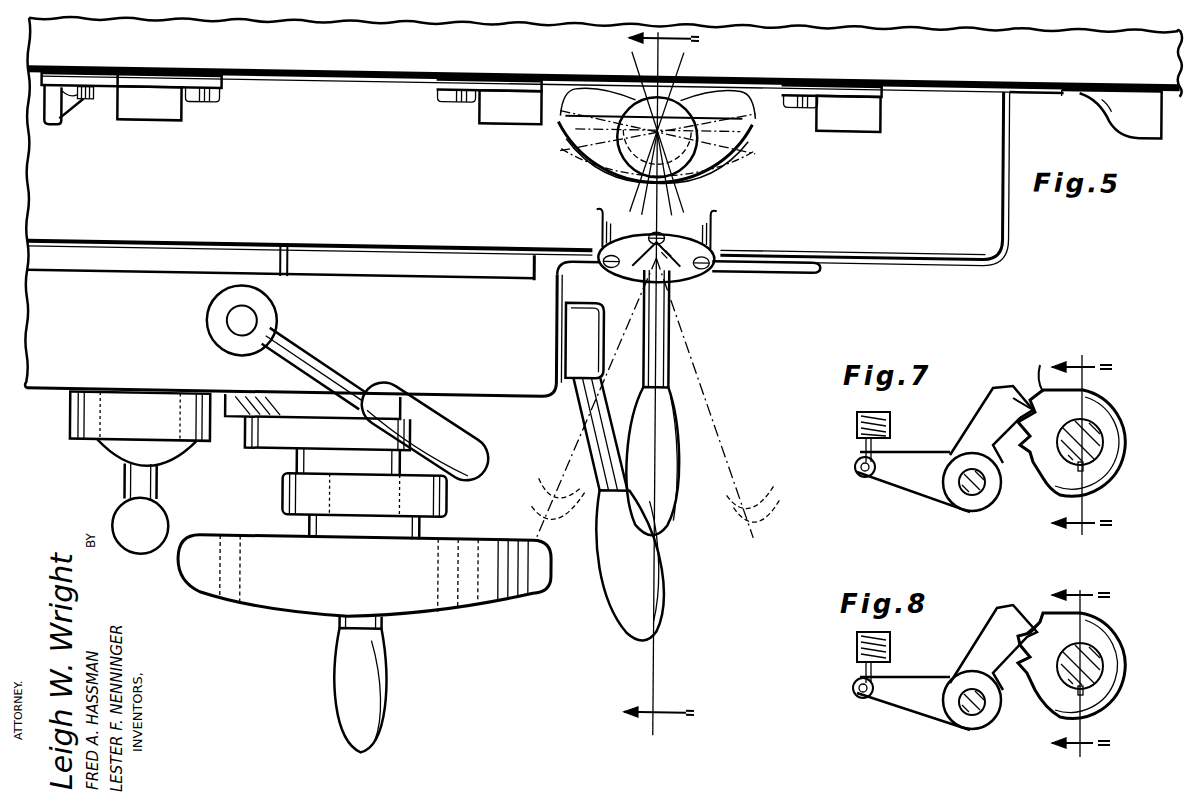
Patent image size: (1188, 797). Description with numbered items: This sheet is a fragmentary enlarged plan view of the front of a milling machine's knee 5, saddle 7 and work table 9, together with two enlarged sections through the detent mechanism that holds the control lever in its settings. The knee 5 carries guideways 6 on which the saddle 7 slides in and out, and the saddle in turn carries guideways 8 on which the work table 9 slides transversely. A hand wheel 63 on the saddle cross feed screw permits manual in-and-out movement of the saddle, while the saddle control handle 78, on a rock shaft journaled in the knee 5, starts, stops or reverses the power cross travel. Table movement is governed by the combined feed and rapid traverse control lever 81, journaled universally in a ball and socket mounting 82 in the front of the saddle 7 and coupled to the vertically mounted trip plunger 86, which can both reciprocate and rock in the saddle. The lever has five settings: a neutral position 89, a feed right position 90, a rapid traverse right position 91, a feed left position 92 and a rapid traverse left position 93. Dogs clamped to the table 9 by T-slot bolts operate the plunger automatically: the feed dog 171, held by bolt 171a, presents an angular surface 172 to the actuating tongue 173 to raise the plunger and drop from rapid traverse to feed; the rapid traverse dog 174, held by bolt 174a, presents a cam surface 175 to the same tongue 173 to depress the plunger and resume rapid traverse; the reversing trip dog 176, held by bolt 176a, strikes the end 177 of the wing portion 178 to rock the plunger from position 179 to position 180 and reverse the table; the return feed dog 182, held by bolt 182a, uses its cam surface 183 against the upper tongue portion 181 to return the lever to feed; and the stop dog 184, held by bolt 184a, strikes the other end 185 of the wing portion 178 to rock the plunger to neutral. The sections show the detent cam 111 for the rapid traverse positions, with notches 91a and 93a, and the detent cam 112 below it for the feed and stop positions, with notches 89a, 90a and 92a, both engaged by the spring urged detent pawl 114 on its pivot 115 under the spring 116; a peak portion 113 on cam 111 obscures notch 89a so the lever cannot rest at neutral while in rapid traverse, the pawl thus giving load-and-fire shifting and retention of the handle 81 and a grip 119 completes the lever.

In FIG. 5, the knee 5 is at (538, 390).
In FIG. 5, the guideways 6 is at (265, 264).
In FIG. 7, the guideways 6 is at (1076, 438).
In FIG. 8, the guideways 6 is at (1079, 673).
In FIG. 5, the saddle 7 is at (864, 176).
In FIG. 5, the guideways 8 is at (1040, 84).
In FIG. 5, the work table 9 is at (606, 54).
In FIG. 5, the hand wheel 63 is at (468, 600).
In FIG. 5, the saddle control handle 78 is at (396, 400).
In FIG. 5, the combined feed and rapid traverse control lever 81 is at (651, 403).
In FIG. 5, the ball and socket mounting 82 is at (679, 266).
In FIG. 5, the trip plunger 86 is at (657, 156).
In FIG. 7, the trip plunger 86 is at (1093, 445).
In FIG. 8, the trip plunger 86 is at (1093, 670).
In FIG. 5, the neutral or inoperative position 89 is at (654, 433).
In FIG. 5, the feed right position 90 is at (766, 493).
In FIG. 5, the rapid traverse right position 91 is at (762, 479).
In FIG. 5, the feed left position 92 is at (534, 506).
In FIG. 5, the rapid traverse left position 93 is at (542, 476).
In FIG. 5, the lever handle 119 is at (629, 595).
In FIG. 5, the feed dog 171 is at (488, 102).
In FIG. 5, the T-slot bolt 171a is at (445, 98).
In FIG. 5, the angular surface 172 is at (523, 112).
In FIG. 5, the actuating tongue 173 is at (727, 144).
In FIG. 5, the rapid traverse dog 174 is at (831, 108).
In FIG. 5, the T-slot bolt 174a is at (790, 99).
In FIG. 5, the cam surface 175 is at (866, 112).
In FIG. 5, the reversing trip dog 176 is at (1111, 114).
In FIG. 5, the T-slot bolt 176a is at (1104, 102).
In FIG. 5, the end of wing portion 177 is at (745, 83).
In FIG. 5, the wing portion 178 is at (717, 166).
In FIG. 5, the position 179 is at (631, 64).
In FIG. 5, the position 180 is at (682, 68).
In FIG. 5, the upper tongue portion 181 is at (583, 170).
In FIG. 5, the return feed dog 182 is at (169, 97).
In FIG. 5, the T-slot bolt 182a is at (208, 104).
In FIG. 5, the cam surface 183 is at (168, 116).
In FIG. 5, the stop dog 184 is at (50, 117).
In FIG. 5, the T-slot bolt 184a is at (86, 105).
In FIG. 5, the end of wing portion 185 is at (576, 87).
In FIG. 7, the detent cam 111 is at (1107, 410).
In FIG. 7, the detent cam 112 is at (1120, 428).
In FIG. 8, the detent cam 112 is at (1113, 637).
In FIG. 7, the peak portion 113 is at (1020, 398).
In FIG. 7, the detent pawl 114 is at (983, 415).
In FIG. 8, the detent pawl 114 is at (983, 643).
In FIG. 7, the pivot 115 is at (977, 493).
In FIG. 8, the pivot 115 is at (970, 716).
In FIG. 7, the spring 116 is at (890, 430).
In FIG. 8, the spring 116 is at (890, 652).
In FIG. 8, the notched portion 89a is at (1028, 636).
In FIG. 8, the position 90a is at (1024, 660).
In FIG. 7, the position 91a is at (1028, 450).
In FIG. 8, the position 92a is at (1040, 613).
In FIG. 7, the position 93a is at (1040, 365).